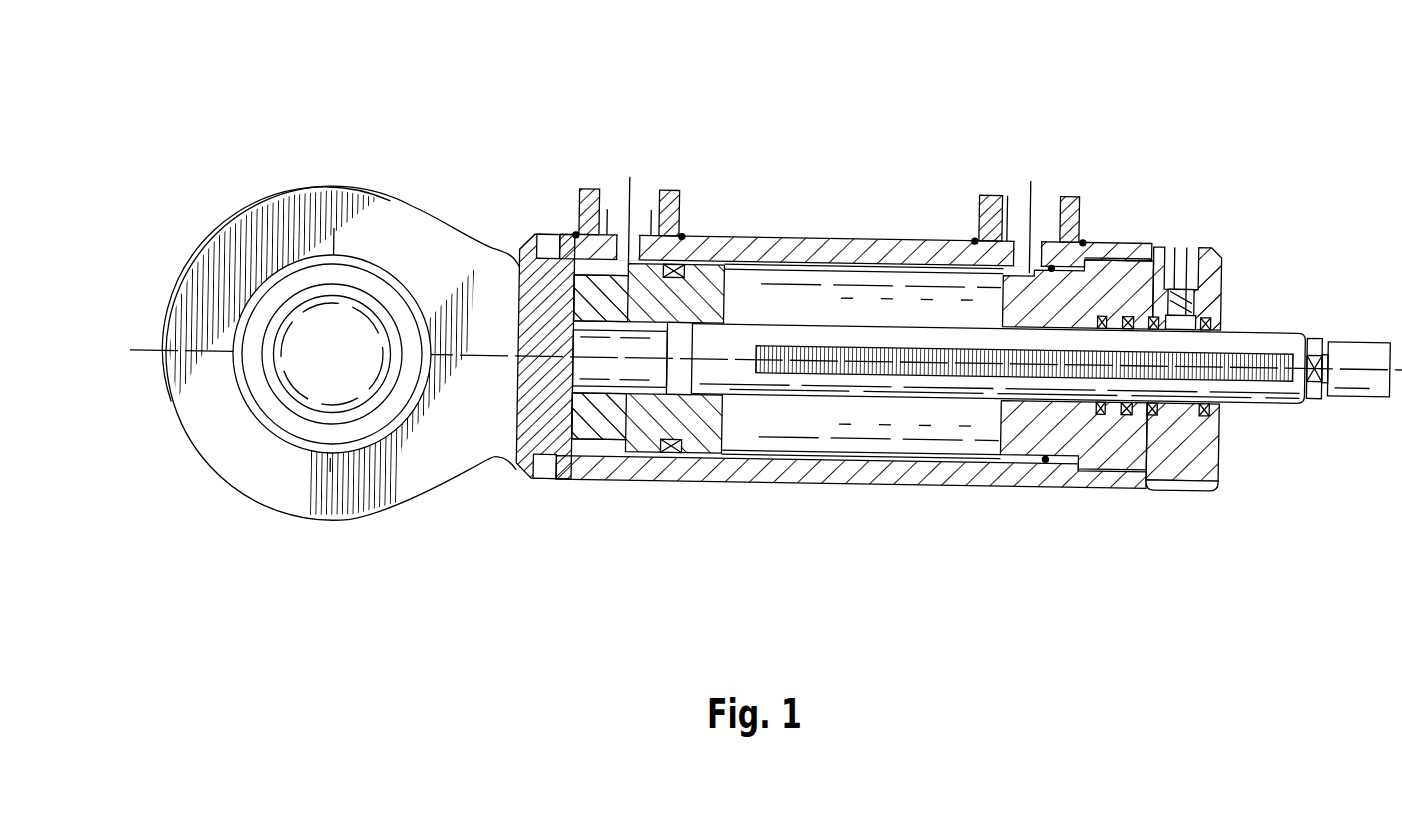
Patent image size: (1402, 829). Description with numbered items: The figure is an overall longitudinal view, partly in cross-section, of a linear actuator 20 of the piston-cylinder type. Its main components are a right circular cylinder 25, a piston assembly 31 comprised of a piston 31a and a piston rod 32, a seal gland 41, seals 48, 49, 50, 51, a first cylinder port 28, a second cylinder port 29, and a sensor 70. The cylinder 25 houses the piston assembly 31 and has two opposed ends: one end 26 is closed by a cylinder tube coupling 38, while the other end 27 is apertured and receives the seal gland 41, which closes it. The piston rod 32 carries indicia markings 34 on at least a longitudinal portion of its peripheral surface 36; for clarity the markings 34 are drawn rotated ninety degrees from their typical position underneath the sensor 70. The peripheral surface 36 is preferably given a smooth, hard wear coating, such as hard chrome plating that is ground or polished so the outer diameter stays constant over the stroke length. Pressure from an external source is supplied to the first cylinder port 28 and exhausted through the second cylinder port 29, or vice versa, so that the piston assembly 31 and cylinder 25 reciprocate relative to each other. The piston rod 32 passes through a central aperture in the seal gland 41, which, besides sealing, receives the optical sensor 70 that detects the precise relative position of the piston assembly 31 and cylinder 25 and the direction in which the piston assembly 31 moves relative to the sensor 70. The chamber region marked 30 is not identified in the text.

The linear actuator 20 is at (835, 549).
The cylinder 25 is at (673, 473).
The end 26 is at (512, 470).
The end 27 is at (1122, 490).
The first cylinder port 28 is at (643, 203).
The second cylinder port 29 is at (1017, 212).
The cylinder chamber 30 is at (917, 285).
The piston assembly 31 is at (630, 425).
The piston 31a is at (593, 307).
The piston rod 32 is at (1285, 338).
The indicia markings 34 is at (1046, 380).
The peripheral surface 36 is at (1277, 402).
The cylinder tube coupling 38 is at (457, 268).
The seal gland 41 is at (1058, 466).
The seal 48 is at (1100, 316).
The seal 49 is at (1128, 316).
The seal 50 is at (1153, 316).
The seal 51 is at (1212, 300).
The sensor 70 is at (1185, 250).